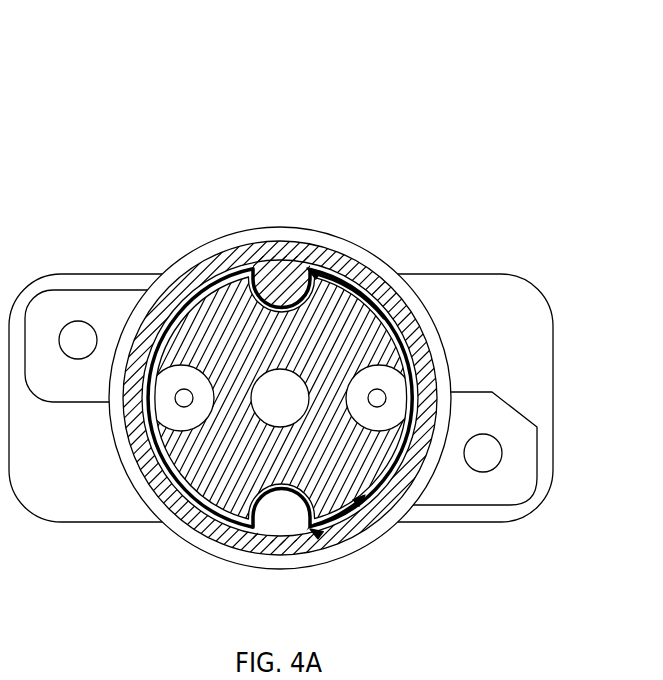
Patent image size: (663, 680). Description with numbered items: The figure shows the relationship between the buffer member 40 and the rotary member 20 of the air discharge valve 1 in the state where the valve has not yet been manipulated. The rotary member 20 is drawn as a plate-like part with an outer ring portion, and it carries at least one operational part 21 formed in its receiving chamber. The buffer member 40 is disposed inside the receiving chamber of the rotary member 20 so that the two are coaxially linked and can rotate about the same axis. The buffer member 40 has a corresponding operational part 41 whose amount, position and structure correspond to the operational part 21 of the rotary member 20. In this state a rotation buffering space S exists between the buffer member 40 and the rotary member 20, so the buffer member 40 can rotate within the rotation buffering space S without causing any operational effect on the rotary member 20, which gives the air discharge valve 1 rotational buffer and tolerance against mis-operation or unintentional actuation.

The air discharge valve 1 is at (618, 39).
The rotary member 20 is at (542, 294).
The operational part 21 is at (289, 272).
The buffer member 40 is at (362, 494).
The corresponding operational part 41 is at (306, 298).
The rotation buffering space S is at (324, 262).